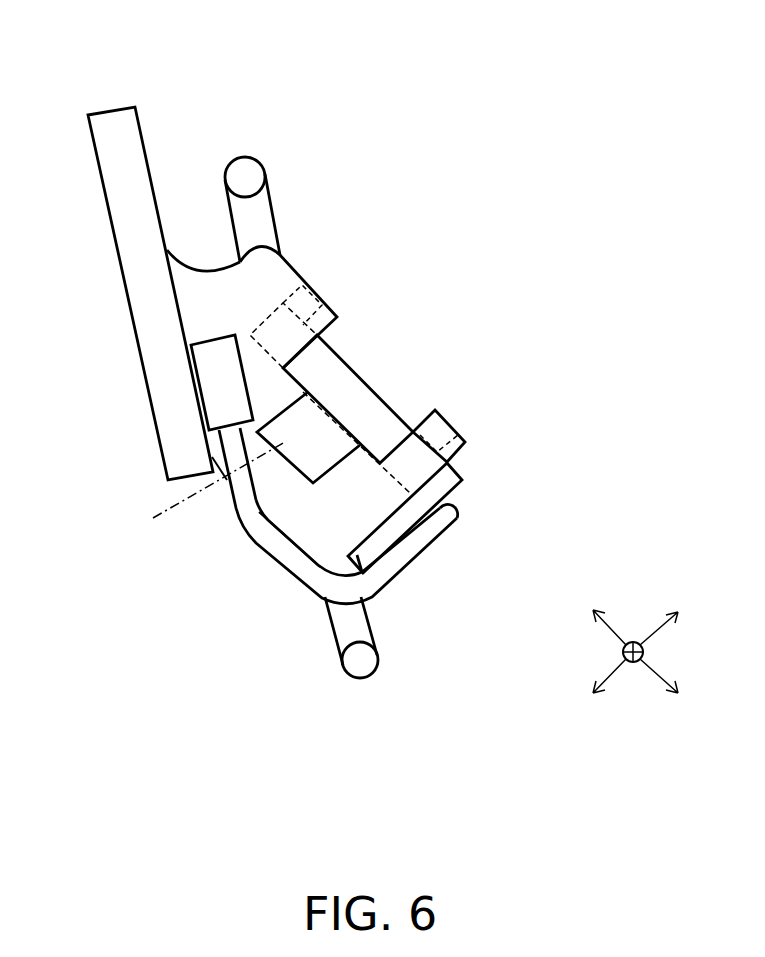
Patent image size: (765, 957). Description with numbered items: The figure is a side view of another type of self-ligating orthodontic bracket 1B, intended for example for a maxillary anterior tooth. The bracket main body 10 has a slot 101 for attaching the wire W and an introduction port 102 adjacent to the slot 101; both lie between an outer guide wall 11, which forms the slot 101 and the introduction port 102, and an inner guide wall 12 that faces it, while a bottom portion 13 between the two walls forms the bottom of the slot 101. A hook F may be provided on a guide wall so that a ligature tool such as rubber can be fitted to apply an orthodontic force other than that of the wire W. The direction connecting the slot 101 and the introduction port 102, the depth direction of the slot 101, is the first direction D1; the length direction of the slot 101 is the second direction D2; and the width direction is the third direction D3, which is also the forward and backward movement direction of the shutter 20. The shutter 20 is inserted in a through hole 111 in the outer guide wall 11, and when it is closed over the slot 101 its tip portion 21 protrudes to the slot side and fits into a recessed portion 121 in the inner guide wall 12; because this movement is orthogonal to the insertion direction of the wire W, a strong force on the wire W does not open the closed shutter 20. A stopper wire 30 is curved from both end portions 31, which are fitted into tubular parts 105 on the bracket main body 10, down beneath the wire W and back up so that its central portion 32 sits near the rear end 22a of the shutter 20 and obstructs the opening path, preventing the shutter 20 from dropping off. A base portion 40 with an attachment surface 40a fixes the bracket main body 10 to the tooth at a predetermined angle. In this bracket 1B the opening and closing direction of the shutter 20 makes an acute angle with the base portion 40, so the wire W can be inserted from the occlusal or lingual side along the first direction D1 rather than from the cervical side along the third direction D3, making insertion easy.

The bracket 1B is at (342, 93).
The bracket main body 10 is at (388, 416).
The outer guide wall 11 is at (440, 430).
The through hole 111 is at (457, 432).
The slot 101 is at (300, 464).
The introduction port 102 is at (357, 343).
The inner guide wall 12 is at (288, 391).
The bottom portion 13 is at (307, 538).
The hook F is at (248, 173).
The shutter 20 is at (363, 402).
The tip portion 21 is at (323, 298).
The recessed portion 121 is at (303, 287).
The rear end 22a is at (458, 488).
The stopper wire 30 is at (294, 516).
The end portions 31 is at (228, 435).
The central portion 32 is at (443, 517).
The base portion 40 is at (102, 108).
The attachment surface 40a is at (120, 250).
The tubular parts 105 is at (199, 378).
The wire W is at (207, 496).
The first direction D1 is at (655, 651).
The second direction D2 is at (642, 651).
The third direction D3 is at (678, 687).